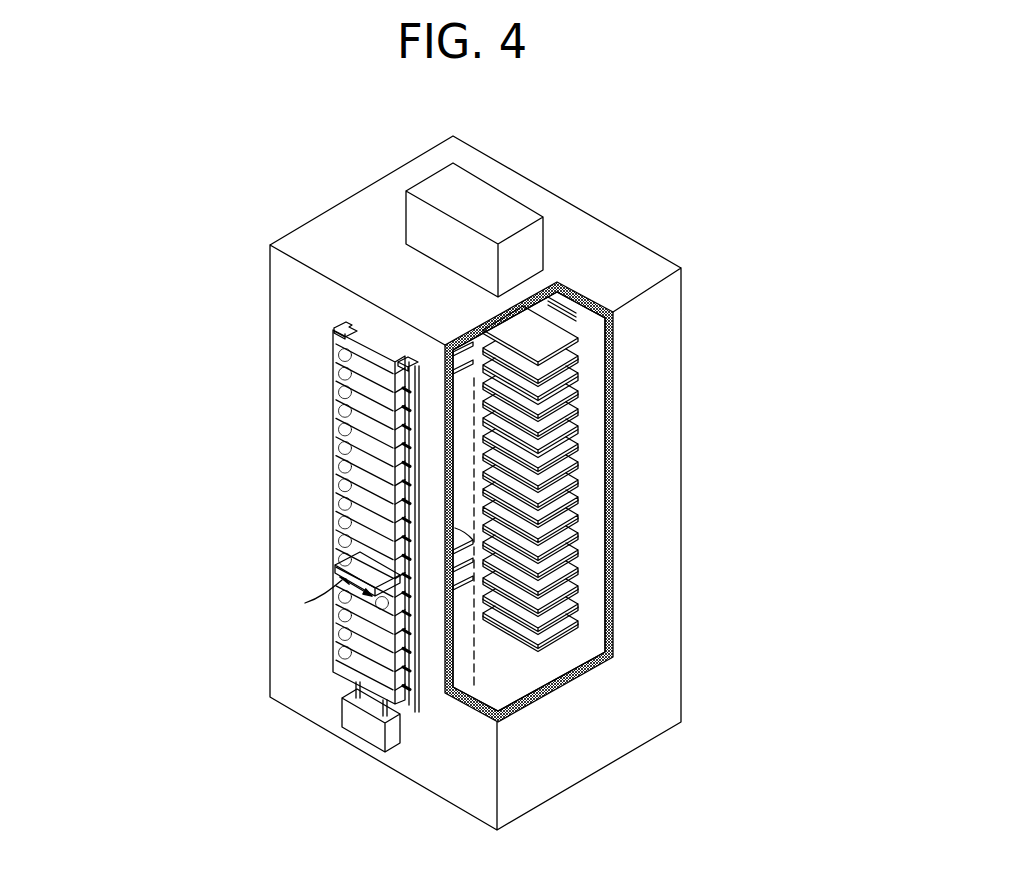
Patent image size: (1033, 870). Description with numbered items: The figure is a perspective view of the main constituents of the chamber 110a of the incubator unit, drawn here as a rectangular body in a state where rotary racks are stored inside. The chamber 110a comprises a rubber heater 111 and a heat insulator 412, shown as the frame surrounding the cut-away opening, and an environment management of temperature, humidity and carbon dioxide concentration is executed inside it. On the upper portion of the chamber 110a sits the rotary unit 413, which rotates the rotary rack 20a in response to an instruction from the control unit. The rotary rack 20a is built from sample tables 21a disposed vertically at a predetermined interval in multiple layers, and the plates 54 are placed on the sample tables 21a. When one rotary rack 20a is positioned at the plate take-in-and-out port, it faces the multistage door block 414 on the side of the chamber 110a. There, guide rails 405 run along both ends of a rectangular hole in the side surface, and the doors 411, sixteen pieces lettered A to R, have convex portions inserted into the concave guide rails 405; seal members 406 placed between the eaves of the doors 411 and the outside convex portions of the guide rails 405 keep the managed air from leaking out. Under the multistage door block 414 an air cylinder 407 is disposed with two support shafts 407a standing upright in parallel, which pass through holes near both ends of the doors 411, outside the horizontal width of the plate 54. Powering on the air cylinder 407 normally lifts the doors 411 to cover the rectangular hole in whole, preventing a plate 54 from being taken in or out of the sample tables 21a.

The rotary unit 413 is at (407, 190).
The chamber 110a is at (281, 238).
The guide rails 405 is at (348, 324).
The seal members 406 is at (345, 328).
The multistage door block 414 is at (320, 402).
The doors 411 is at (330, 478).
The plate 54 is at (338, 577).
The support shafts 407a is at (356, 689).
The air cylinder 407 is at (358, 723).
The heat insulator 412 is at (478, 714).
The rubber heater 111 is at (562, 688).
The rotary rack 20a is at (594, 383).
The sample tables 21a is at (577, 500).